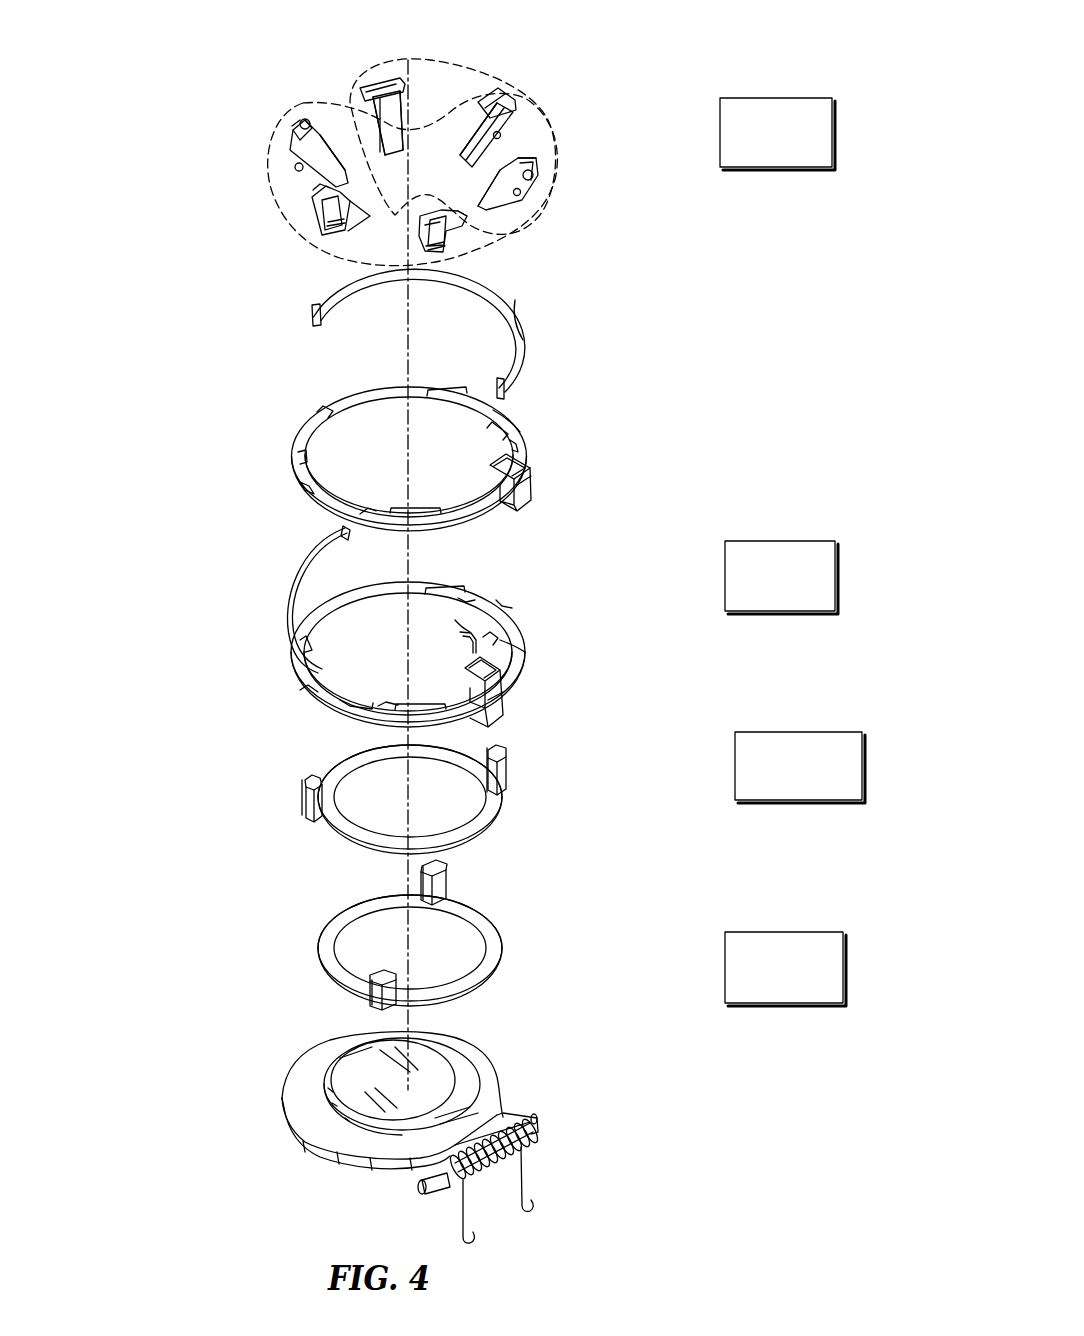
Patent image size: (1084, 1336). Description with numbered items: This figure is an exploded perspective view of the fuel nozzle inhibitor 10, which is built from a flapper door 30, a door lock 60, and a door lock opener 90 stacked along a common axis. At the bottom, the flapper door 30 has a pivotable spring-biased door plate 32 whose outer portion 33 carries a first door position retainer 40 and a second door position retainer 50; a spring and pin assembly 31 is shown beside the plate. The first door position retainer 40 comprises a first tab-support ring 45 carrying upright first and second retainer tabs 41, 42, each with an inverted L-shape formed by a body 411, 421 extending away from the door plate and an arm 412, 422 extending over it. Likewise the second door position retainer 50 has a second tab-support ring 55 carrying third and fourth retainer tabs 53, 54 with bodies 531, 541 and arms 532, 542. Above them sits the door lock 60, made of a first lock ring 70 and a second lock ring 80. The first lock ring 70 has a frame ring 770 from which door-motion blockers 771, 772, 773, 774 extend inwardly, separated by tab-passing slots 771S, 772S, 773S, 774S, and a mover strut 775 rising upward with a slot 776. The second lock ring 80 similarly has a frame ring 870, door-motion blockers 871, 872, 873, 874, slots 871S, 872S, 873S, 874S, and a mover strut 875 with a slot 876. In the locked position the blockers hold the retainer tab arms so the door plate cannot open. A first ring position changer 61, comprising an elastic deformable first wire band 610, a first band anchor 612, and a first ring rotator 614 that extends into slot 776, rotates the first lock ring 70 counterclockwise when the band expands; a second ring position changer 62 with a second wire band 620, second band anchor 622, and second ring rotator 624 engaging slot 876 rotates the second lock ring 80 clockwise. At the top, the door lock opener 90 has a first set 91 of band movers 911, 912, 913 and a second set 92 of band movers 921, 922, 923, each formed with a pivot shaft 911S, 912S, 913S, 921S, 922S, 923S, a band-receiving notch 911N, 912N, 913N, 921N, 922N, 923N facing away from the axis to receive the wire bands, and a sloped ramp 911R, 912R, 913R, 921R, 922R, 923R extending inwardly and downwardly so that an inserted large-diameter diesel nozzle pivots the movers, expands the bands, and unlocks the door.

The nozzle inhibitor 10 is at (748, 178).
The flapper door 30 is at (800, 932).
The flapper door opening 31 is at (435, 1065).
The door plate 32 is at (725, 968).
The outer portion 33 is at (482, 1080).
The first door position retainer 40 is at (725, 968).
The first retainer tab 41 is at (255, 1015).
The body 411 is at (372, 1001).
The arm 412 is at (383, 968).
The second retainer tab 42 is at (563, 870).
The body 421 is at (450, 890).
The arm 422 is at (452, 865).
The first tab-support ring 45 is at (465, 994).
The second door position retainer 50 is at (725, 968).
The third retainer tab 53 is at (208, 742).
The body 531 is at (310, 811).
The arm 532 is at (305, 765).
The fourth retainer tab 54 is at (613, 740).
The body 541 is at (512, 777).
The arm 542 is at (517, 746).
The second tab-support ring 55 is at (497, 826).
The door lock 60 is at (797, 541).
The first ring position changer 61 is at (468, 620).
The first wire band 610 is at (300, 580).
The first band anchor 612 is at (336, 542).
The first ring rotator 614 is at (497, 660).
The second ring position changer 62 is at (725, 575).
The second wire band 620 is at (517, 300).
The second band anchor 622 is at (327, 322).
The second ring rotator 624 is at (512, 393).
The first lock ring 70 is at (725, 588).
The frame ring 770 is at (290, 672).
The door-motion blocker 771 is at (352, 694).
The tab-passing slot 771S is at (305, 697).
The door-motion blocker 772 is at (309, 643).
The tab-passing slot 772S is at (425, 592).
The door-motion blocker 773 is at (463, 600).
The tab-passing slot 773S is at (500, 600).
The door-motion blocker 774 is at (442, 700).
The tab-passing slot 774S is at (388, 700).
The mover strut 775 is at (508, 700).
The slot 776 is at (480, 643).
The second lock ring 80 is at (725, 575).
The frame ring 870 is at (300, 503).
The door-motion blocker 871 is at (305, 487).
The slot 871S is at (298, 455).
The door-motion blocker 872 is at (341, 403).
The slot 872S is at (455, 392).
The door-motion blocker 873 is at (490, 430).
The slot 873S is at (518, 445).
The door-motion blocker 874 is at (440, 513).
The slot 874S is at (368, 510).
The mover strut 875 is at (527, 497).
The slot 876 is at (532, 460).
The door lock opener 90 is at (778, 98).
The first set of band movers 91 is at (720, 132).
The band mover 911 is at (283, 143).
The pivot shaft 911S is at (293, 124).
The sloped ramp 911R is at (332, 124).
The band-receiving notch 911N is at (285, 170).
The band mover 912 is at (295, 213).
The pivot shaft 912S is at (347, 230).
The sloped ramp 912R is at (372, 197).
The band-receiving notch 912N is at (323, 230).
The band mover 913 is at (483, 234).
The pivot shaft 913S is at (425, 242).
The sloped ramp 913R is at (426, 207).
The band-receiving notch 913N is at (455, 246).
The second set of band movers 92 is at (720, 132).
The band mover 921 is at (418, 72).
The pivot shaft 921S is at (387, 80).
The sloped ramp 921R is at (407, 112).
The band-receiving notch 921N is at (372, 120).
The band mover 922 is at (515, 100).
The pivot shaft 922S is at (500, 85).
The sloped ramp 922R is at (456, 135).
The band-receiving notch 922N is at (505, 133).
The band mover 923 is at (548, 176).
The pivot shaft 923S is at (545, 159).
The sloped ramp 923R is at (502, 166).
The band-receiving notch 923N is at (525, 193).